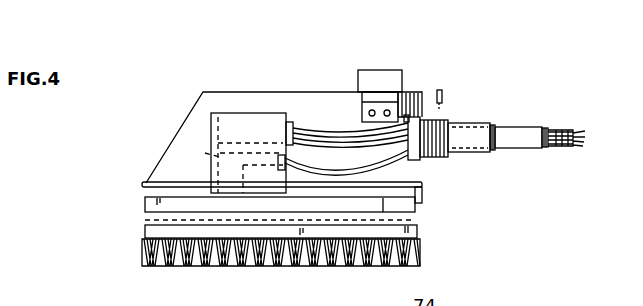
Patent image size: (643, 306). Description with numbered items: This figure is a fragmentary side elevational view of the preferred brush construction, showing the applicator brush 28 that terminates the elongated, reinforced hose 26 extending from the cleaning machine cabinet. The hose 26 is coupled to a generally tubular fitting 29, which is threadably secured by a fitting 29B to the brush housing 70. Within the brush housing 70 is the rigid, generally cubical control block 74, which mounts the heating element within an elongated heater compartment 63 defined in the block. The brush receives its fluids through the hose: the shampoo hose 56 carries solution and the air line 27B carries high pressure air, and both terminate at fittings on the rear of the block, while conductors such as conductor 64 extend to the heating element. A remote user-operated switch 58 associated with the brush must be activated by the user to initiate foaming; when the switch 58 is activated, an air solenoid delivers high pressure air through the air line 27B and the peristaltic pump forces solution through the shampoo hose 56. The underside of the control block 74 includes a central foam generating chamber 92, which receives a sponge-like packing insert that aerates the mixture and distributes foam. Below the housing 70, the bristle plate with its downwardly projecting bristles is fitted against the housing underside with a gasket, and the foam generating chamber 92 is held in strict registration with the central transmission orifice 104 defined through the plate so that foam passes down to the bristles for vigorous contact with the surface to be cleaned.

The applicator brush 28 is at (181, 83).
The brush housing 70 is at (231, 93).
The control block 74 is at (257, 130).
The foam generating chamber 92 is at (219, 155).
The heater compartment 63 is at (323, 136).
The conductor 64 is at (320, 143).
The switch 58 is at (404, 68).
The air line 27B is at (387, 148).
The shampoo hose 56 is at (393, 149).
The fitting 29B is at (443, 137).
The tubular fitting 29 is at (473, 135).
The hose 26 is at (525, 138).
The transmission orifice 104 is at (147, 223).